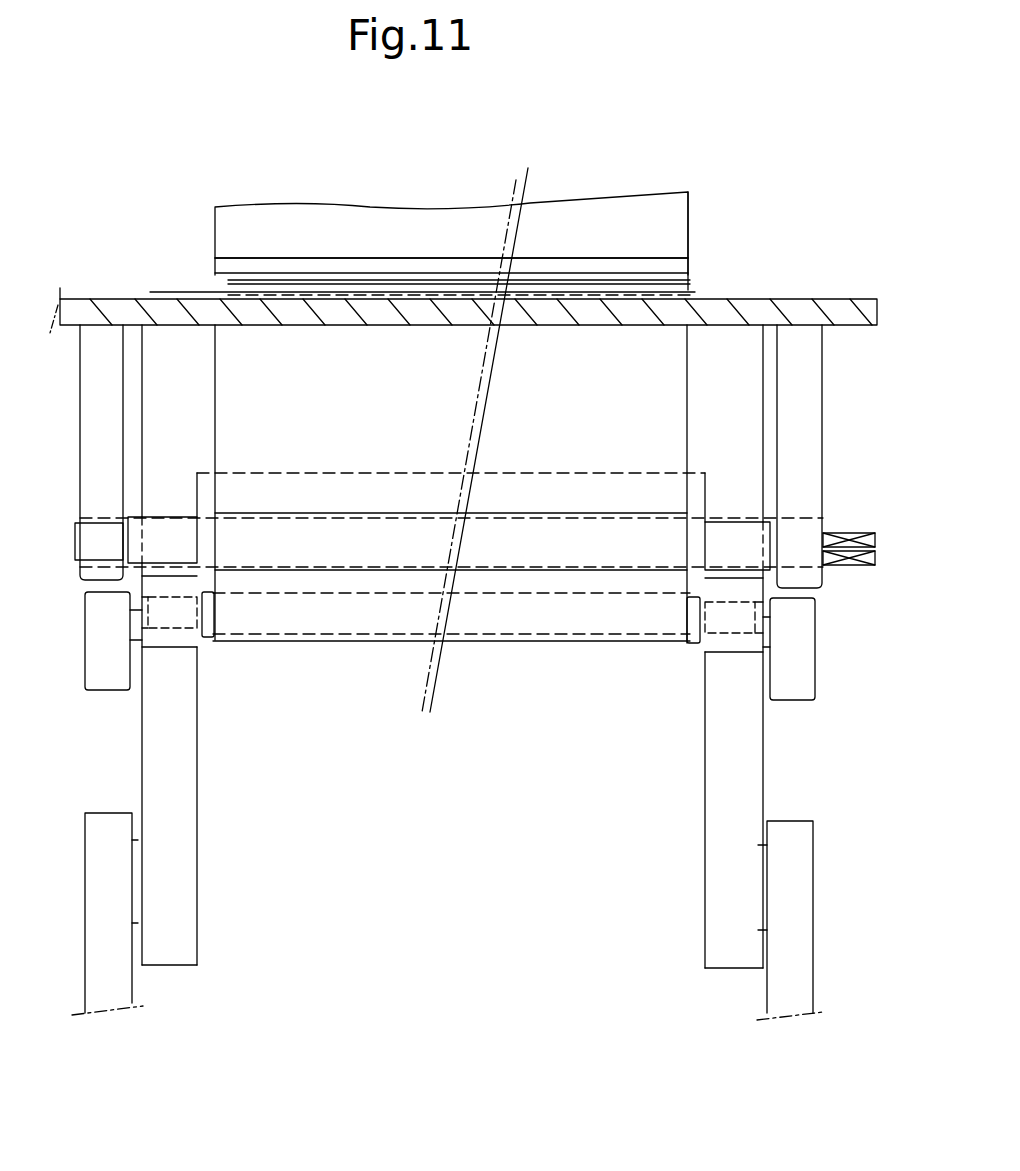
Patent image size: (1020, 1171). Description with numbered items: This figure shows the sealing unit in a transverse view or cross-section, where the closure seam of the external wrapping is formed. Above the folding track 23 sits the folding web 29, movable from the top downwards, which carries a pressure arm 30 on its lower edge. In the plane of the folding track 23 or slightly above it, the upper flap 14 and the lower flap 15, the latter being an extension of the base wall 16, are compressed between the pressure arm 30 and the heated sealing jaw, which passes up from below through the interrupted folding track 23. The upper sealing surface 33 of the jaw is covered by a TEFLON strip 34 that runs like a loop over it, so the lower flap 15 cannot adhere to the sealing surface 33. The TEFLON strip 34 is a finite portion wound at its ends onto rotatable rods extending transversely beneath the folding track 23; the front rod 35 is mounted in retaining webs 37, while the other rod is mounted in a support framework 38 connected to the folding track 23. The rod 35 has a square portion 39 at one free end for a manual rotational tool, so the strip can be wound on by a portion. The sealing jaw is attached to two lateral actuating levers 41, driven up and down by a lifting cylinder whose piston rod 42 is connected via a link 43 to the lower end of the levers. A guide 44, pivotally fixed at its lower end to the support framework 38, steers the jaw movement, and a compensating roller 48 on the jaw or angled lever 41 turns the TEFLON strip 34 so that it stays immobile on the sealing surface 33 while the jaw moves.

The upper flap 14 is at (440, 285).
The lower flap 15 is at (320, 298).
The base wall 16 is at (190, 295).
The folding track 23 is at (830, 300).
The folding web 29 is at (632, 228).
The pressure arm 30 is at (360, 268).
The sealing surface 33 is at (690, 290).
The TEFLON strip 34 is at (640, 375).
The rod 35 is at (735, 565).
The retaining webs 37 is at (87, 418).
The support framework 38 is at (745, 412).
The square portion 39 is at (845, 568).
The actuating levers 41 is at (188, 930).
The piston rod 42 is at (118, 990).
The link 43 is at (135, 876).
The guide 44 is at (92, 688).
The compensating roller 48 is at (207, 642).